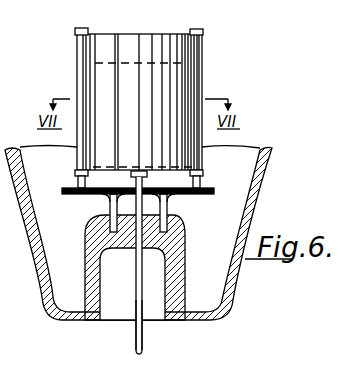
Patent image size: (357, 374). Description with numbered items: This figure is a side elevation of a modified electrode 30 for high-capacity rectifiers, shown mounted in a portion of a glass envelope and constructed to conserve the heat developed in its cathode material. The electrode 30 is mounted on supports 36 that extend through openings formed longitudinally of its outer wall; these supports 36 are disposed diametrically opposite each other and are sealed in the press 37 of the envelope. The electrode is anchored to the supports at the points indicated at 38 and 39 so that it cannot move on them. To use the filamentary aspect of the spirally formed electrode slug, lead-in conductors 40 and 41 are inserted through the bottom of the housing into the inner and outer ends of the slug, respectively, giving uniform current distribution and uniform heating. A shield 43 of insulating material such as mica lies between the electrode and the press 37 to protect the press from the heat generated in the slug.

The electrode 30 is at (119, 102).
The supports 36 is at (77, 178).
The press 37 is at (186, 233).
The anchoring point 38 is at (204, 32).
The anchoring point 39 is at (88, 32).
The lead-in conductor 40 is at (135, 276).
The lead-in conductor 41 is at (142, 312).
The shield 43 is at (187, 194).